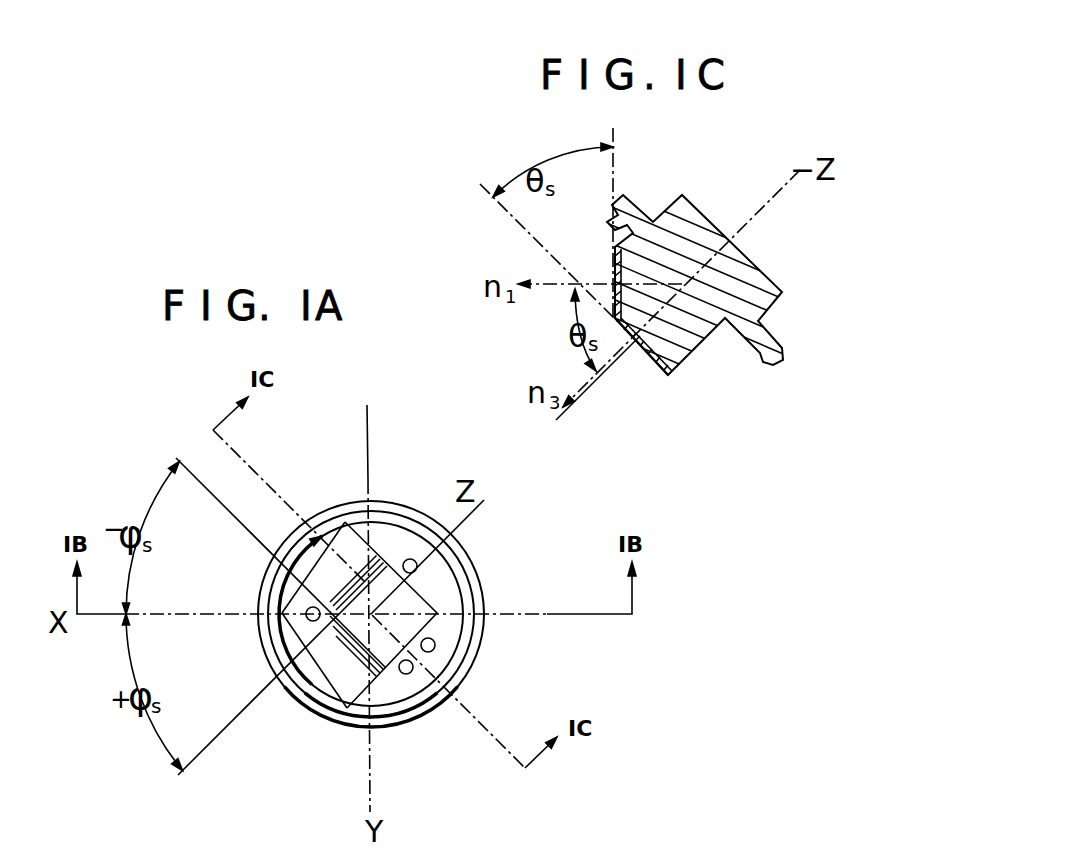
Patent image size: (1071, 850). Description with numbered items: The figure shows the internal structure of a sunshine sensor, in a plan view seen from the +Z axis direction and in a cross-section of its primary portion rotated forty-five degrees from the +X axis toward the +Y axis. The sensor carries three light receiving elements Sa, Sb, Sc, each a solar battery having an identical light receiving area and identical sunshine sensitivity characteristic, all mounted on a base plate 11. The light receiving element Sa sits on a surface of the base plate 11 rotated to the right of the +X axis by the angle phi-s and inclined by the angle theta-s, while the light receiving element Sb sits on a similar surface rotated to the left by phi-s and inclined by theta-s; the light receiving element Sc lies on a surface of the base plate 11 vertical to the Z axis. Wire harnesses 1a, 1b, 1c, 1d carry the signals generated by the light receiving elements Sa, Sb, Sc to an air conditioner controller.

In FIG. 1A, the wire harness 1a is at (306, 608).
In FIG. 1A, the wire harness 1b is at (408, 675).
In FIG. 1A, the wire harness 1c is at (410, 558).
In FIG. 1A, the wire harness 1d is at (435, 650).
In FIG. 1C, the base plate 11 is at (700, 336).
In FIG. 1A, the light receiving element Sa is at (341, 548).
In FIG. 1C, the light receiving element Sa is at (613, 263).
In FIG. 1A, the light receiving element Sb is at (330, 670).
In FIG. 1A, the light receiving element Sc is at (407, 602).
In FIG. 1C, the light receiving element Sc is at (660, 368).